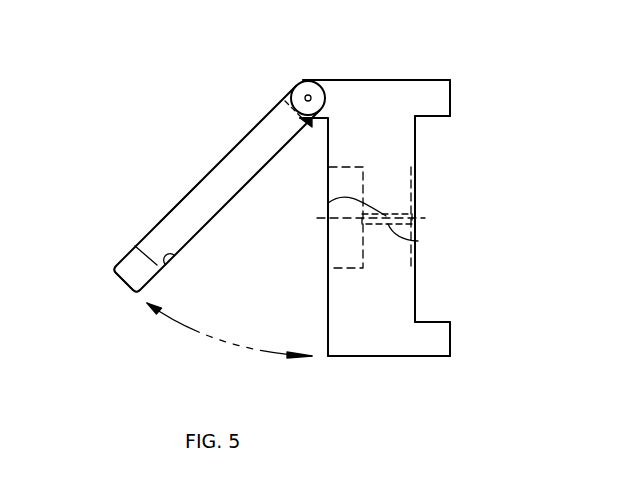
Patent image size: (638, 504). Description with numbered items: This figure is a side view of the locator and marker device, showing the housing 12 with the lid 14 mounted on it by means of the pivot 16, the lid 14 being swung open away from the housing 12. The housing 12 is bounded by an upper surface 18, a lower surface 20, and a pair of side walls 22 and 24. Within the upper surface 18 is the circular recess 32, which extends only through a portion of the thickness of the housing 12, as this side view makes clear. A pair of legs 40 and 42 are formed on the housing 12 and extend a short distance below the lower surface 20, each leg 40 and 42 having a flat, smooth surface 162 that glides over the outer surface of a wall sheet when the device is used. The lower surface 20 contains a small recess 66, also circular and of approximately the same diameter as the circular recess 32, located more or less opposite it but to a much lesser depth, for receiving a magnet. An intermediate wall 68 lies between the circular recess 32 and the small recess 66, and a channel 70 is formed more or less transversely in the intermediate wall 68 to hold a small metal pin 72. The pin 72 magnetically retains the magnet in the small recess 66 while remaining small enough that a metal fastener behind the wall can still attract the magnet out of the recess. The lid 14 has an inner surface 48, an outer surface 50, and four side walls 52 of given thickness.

The housing 12 is at (375, 345).
The lid 14 is at (229, 151).
The pivot 16 is at (305, 96).
The upper surface 18 is at (327, 313).
The lower surface 20 is at (417, 140).
The side wall 22 is at (352, 357).
The side wall 24 is at (413, 78).
The circular recess 32 is at (335, 253).
The leg 40 is at (440, 93).
The leg 42 is at (438, 347).
The inner surface 48 is at (135, 246).
The outer surface 50 is at (157, 218).
The side walls 52 is at (115, 278).
The small recess 66 is at (415, 183).
The intermediate wall 68 is at (395, 197).
The channel 70 is at (418, 241).
The metal pin 72 is at (328, 203).
The flat, smooth surface 162 is at (450, 108).